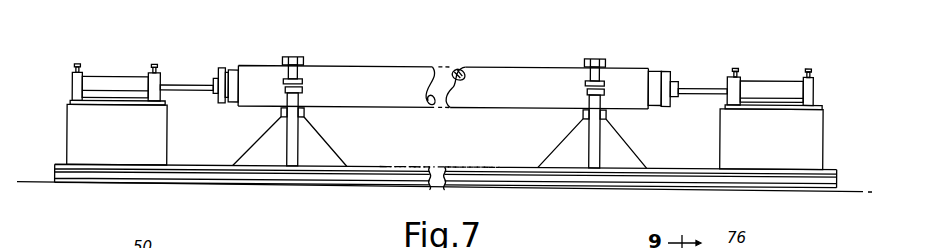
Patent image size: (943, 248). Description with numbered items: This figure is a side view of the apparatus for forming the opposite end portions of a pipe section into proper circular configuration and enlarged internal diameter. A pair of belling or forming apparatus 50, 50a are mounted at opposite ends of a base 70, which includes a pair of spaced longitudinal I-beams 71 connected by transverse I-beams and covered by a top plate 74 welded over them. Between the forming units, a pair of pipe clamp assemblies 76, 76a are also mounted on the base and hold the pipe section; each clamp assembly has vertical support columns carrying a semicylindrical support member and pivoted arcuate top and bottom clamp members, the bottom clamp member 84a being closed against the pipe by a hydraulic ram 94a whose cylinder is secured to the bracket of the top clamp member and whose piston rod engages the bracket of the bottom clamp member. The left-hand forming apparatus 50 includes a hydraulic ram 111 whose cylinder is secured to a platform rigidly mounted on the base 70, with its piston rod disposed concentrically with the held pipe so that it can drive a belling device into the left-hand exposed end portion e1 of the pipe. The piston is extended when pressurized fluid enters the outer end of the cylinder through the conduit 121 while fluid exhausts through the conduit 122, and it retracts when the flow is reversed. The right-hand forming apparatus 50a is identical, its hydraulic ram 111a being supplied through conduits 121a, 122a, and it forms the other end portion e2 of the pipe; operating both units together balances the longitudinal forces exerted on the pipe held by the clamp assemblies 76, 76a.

The belling or forming apparatus 50 is at (122, 96).
The hydraulic ram 111 is at (132, 75).
The conduit 121 is at (76, 66).
The conduit 122 is at (156, 72).
The left-hand exposed end portion of the pipe e1 is at (228, 72).
The pipe clamp assembly 76 is at (288, 56).
The top plate 74 is at (412, 152).
The base 70 is at (380, 181).
The longitudinal I-beam 71 is at (532, 181).
The pipe clamp assembly 76a is at (591, 102).
The hydraulic ram 94a is at (588, 74).
The bottom clamp member 84a is at (589, 104).
The other end portion of the pipe e2 is at (655, 76).
The belling or forming apparatus 50a is at (770, 99).
The hydraulic ram 111a is at (777, 80).
The conduit 122a is at (733, 75).
The conduit 121a is at (808, 70).